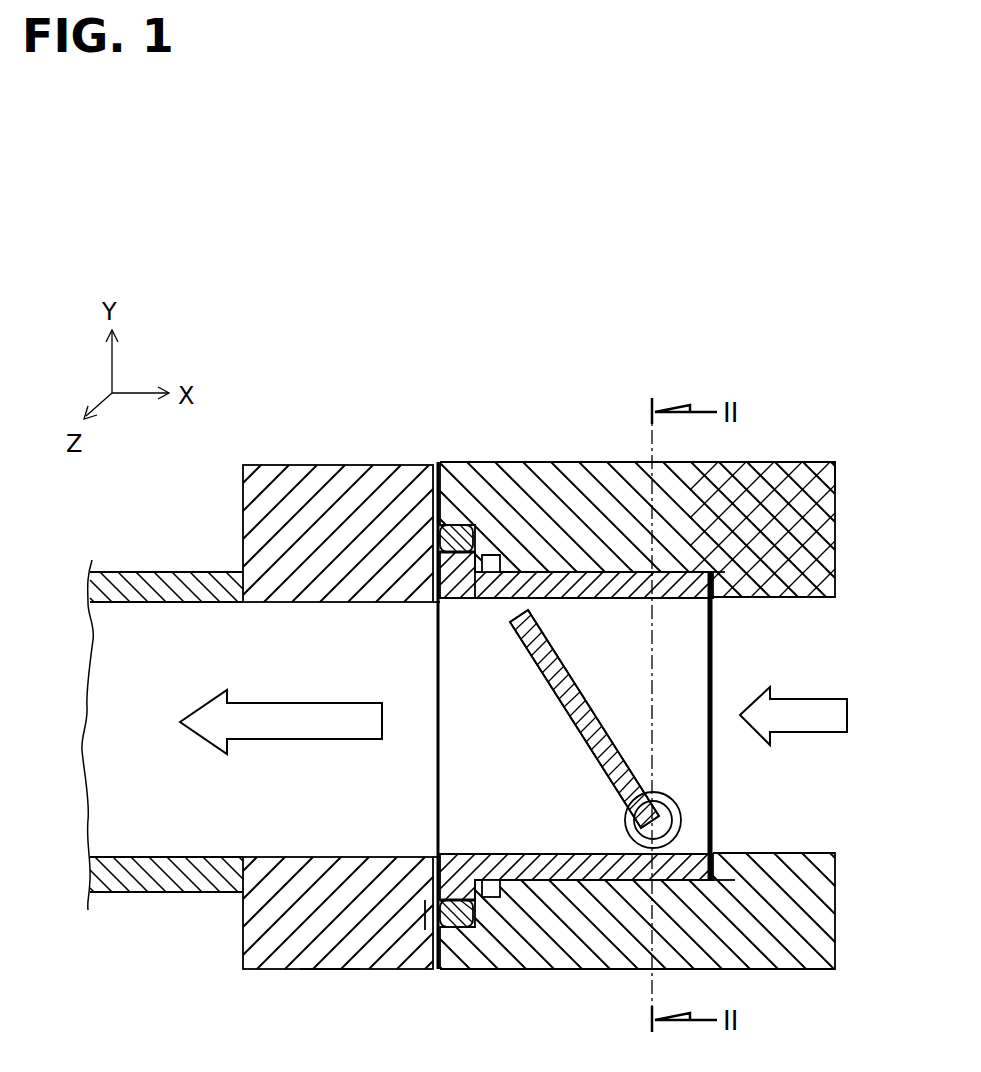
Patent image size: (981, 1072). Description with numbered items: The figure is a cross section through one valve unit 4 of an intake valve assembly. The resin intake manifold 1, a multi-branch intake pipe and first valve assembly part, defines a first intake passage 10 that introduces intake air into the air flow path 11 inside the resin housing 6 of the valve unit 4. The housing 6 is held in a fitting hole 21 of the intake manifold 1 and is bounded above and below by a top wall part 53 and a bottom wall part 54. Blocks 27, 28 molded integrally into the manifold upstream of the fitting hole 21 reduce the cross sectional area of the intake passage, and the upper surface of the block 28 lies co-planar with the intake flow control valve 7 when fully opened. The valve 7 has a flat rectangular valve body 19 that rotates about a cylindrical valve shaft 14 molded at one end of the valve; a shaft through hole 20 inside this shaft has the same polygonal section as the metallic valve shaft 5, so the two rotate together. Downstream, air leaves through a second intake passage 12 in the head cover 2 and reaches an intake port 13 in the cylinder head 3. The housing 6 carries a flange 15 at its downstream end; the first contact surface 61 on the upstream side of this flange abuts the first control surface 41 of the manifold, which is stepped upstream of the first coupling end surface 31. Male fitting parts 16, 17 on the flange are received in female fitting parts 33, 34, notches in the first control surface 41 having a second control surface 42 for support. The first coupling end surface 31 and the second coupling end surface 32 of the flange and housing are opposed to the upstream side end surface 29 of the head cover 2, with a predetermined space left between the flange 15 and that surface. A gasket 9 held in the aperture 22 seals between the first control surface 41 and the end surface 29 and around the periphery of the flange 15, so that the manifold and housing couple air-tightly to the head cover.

The intake manifold 1 is at (797, 462).
The head cover 2 is at (330, 465).
The cylinder head 3 is at (140, 572).
The valve unit 4 is at (822, 462).
The valve shaft 5 is at (683, 812).
The housing 6 is at (735, 569).
The intake flow control valve 7 is at (593, 708).
The valve body 19 is at (584, 719).
The gasket 9 is at (430, 897).
The first intake passage 10 is at (791, 806).
The air flow path 11 is at (615, 676).
The second intake passage 12 is at (324, 794).
The intake port 13 is at (133, 752).
The valve shaft 14 is at (712, 876).
The flange 15 is at (333, 972).
The male fitting part 16 is at (500, 560).
The male fitting part 17 is at (525, 897).
The shaft through hole 20 is at (720, 900).
The fitting hole 21 is at (592, 880).
The aperture 22 is at (470, 930).
The block 27 is at (780, 599).
The block 28 is at (785, 853).
The upstream side end surface 29 is at (462, 540).
The first coupling end surface 31 is at (441, 515).
The second coupling end surface 32 is at (437, 522).
The female fitting part 33 is at (530, 570).
The female fitting part 34 is at (545, 880).
The first control surface 41 is at (432, 607).
The second control surface 42 is at (437, 895).
The top wall part 53 is at (622, 572).
The bottom wall part 54 is at (633, 880).
The first contact surface 61 is at (476, 600).